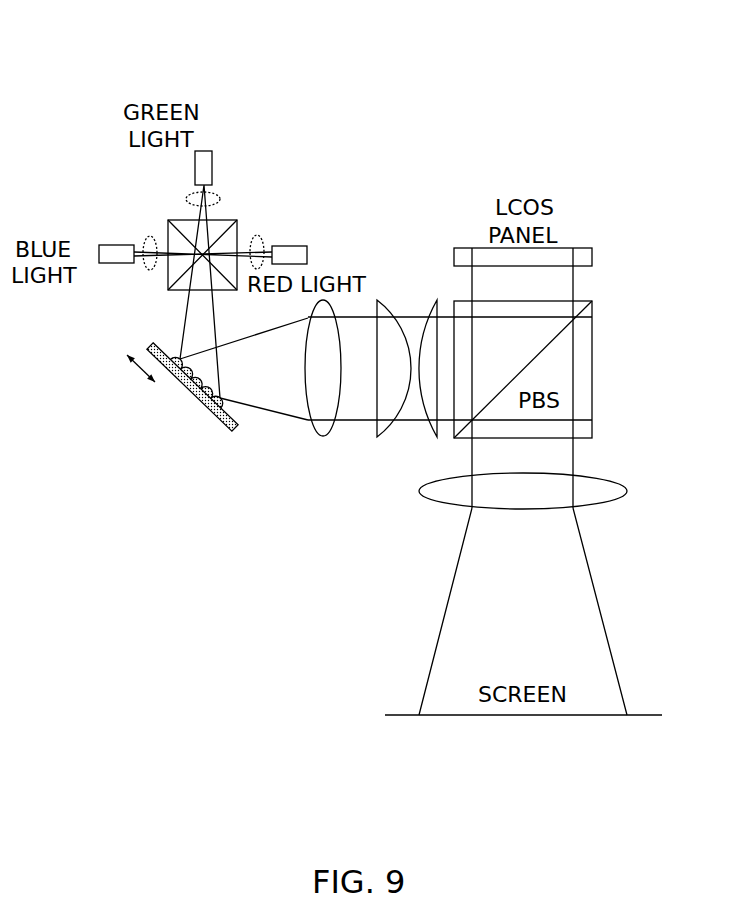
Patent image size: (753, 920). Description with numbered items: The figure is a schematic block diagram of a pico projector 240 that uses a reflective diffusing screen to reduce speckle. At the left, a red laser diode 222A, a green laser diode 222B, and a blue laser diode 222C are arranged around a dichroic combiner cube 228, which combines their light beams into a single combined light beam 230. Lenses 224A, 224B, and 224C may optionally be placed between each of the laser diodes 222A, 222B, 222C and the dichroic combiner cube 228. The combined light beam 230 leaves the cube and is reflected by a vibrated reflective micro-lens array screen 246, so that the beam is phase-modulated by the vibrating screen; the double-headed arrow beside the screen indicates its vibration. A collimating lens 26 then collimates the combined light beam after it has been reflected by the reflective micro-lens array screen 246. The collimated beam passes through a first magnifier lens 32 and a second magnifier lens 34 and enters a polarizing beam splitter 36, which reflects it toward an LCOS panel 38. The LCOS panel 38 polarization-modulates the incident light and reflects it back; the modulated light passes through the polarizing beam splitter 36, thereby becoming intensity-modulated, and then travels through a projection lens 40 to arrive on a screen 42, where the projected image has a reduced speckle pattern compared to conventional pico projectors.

The pico projector 240 is at (112, 52).
The red laser diode 222A is at (307, 250).
The green laser diode 222B is at (212, 170).
The blue laser diode 222C is at (98, 247).
The lens 224A is at (262, 239).
The lens 224B is at (219, 200).
The lens 224C is at (146, 270).
The dichroic combiner cube 228 is at (168, 223).
The combined light beam 230 is at (218, 335).
The vibrated reflective micro-lens array screen 246 is at (215, 418).
The collimating lens 26 is at (315, 437).
The first magnifier lens 32 is at (381, 302).
The second magnifier lens 34 is at (427, 437).
The polarizing beam splitter 36 is at (594, 382).
The LCOS panel 38 is at (594, 256).
The projection lens 40 is at (614, 481).
The screen 42 is at (640, 715).